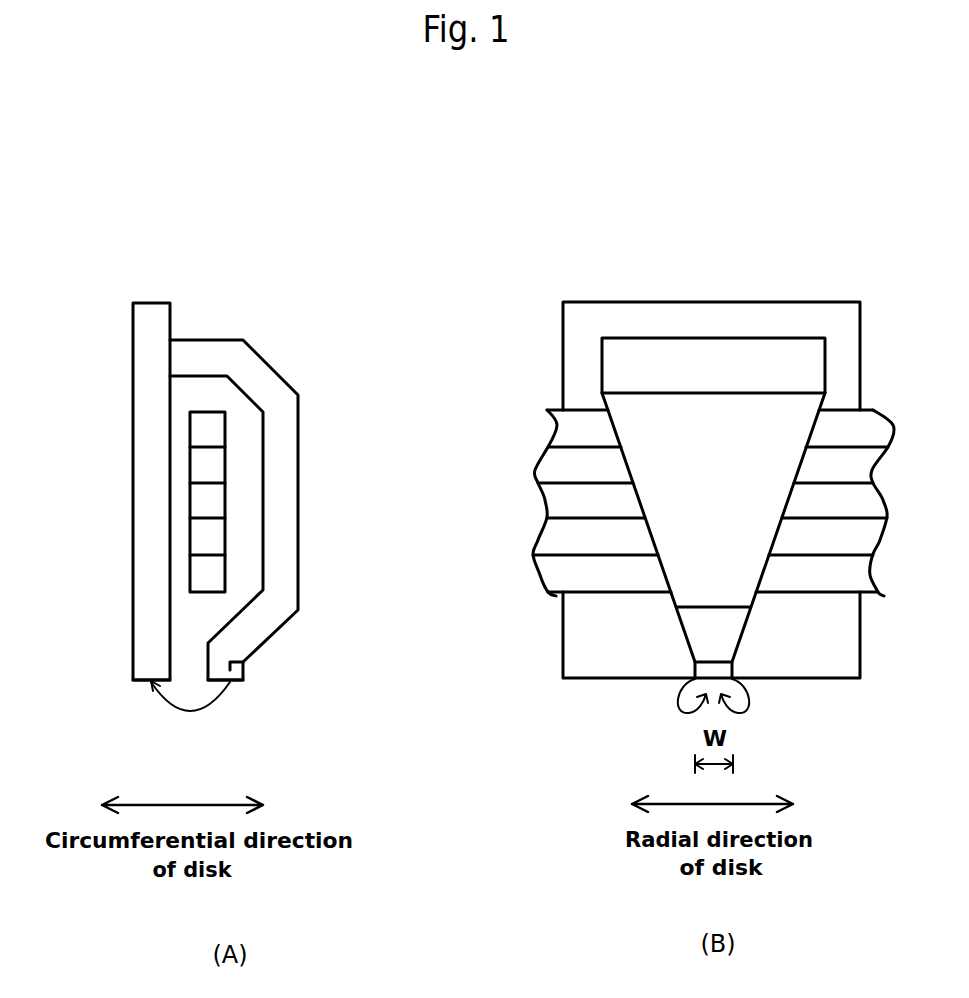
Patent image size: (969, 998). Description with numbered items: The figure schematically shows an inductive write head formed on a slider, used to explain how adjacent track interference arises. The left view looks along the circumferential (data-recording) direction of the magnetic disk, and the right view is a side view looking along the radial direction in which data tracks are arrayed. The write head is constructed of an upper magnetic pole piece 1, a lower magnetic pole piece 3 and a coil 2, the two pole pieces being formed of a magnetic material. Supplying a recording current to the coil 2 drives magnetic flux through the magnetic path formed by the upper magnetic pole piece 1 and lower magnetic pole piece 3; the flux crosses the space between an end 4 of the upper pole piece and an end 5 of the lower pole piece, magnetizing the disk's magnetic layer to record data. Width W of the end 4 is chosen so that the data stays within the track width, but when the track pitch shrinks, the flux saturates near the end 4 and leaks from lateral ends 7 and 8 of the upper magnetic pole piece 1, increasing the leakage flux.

The upper magnetic pole piece 1 is at (299, 482).
The coil 2 is at (227, 423).
The lower magnetic pole piece 3 is at (133, 408).
The end of the upper magnetic pole piece 4 is at (243, 680).
The end of the lower magnetic pole piece 5 is at (143, 680).
The lateral end of the upper magnetic pole piece 7 is at (247, 660).
The lateral end of the upper magnetic pole piece 8 is at (735, 668).